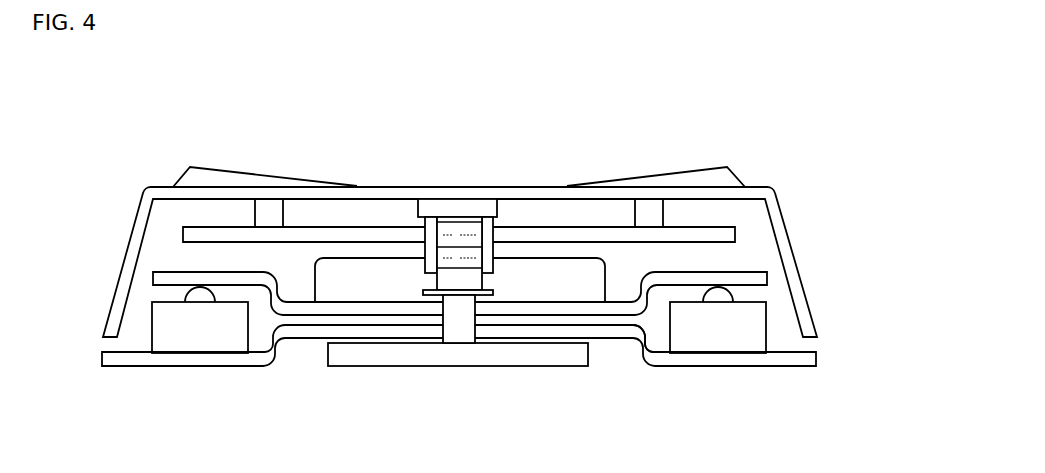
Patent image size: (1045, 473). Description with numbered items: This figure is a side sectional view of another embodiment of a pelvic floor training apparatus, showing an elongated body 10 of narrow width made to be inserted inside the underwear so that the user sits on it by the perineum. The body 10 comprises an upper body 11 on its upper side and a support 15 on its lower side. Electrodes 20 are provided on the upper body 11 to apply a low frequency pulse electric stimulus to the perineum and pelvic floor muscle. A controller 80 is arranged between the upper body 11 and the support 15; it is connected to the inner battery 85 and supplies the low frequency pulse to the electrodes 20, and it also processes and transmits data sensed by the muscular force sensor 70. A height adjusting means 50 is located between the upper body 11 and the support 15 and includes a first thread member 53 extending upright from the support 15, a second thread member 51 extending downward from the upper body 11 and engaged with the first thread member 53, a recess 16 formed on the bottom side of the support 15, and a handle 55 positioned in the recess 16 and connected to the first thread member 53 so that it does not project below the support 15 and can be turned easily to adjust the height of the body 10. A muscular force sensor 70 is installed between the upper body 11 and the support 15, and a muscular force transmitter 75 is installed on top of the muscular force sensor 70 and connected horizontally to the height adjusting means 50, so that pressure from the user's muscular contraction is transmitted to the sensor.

The body 10 is at (524, 315).
The upper body 11 is at (787, 258).
The support 15 is at (792, 363).
The recess 16 is at (607, 340).
The electrodes 20 is at (248, 180).
The height adjusting means 50 is at (465, 210).
The second thread member 51 is at (430, 250).
The first thread member 53 is at (461, 237).
The handle 55 is at (532, 358).
The muscular force sensor 70 is at (195, 330).
The muscular force transmitter 75 is at (157, 277).
The controller 80 is at (200, 239).
The inner battery 85 is at (362, 278).